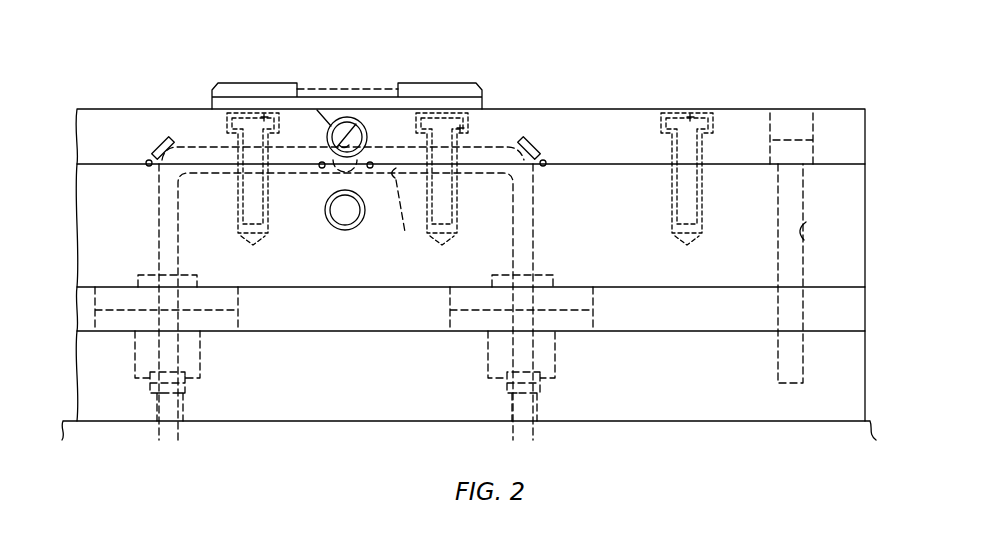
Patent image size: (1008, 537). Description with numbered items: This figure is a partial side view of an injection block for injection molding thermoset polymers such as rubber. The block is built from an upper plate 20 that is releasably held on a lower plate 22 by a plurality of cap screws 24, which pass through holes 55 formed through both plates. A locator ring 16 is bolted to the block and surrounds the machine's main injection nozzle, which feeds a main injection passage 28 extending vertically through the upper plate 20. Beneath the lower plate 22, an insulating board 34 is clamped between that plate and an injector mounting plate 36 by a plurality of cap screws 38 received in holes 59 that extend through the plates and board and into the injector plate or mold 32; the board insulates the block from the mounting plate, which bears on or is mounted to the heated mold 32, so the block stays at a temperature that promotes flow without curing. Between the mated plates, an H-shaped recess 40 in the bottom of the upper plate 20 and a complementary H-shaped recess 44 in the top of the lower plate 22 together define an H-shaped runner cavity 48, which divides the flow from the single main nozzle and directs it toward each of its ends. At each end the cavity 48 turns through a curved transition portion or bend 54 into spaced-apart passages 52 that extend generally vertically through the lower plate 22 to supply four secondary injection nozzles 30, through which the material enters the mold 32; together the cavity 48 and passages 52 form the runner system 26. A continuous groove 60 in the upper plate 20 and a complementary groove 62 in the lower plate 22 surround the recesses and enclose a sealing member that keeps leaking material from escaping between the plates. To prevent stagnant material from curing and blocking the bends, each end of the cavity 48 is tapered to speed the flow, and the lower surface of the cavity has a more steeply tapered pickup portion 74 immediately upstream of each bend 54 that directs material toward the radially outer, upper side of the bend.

The locator ring 16 is at (463, 88).
The upper plate 20 is at (835, 112).
The lower plate 22 is at (866, 208).
The cap screws 24 is at (251, 116).
The runner system 26 is at (503, 144).
The main injection passage 28 is at (366, 112).
The secondary injection nozzles 30 is at (200, 383).
The mold 32 is at (873, 421).
The insulating board 34 is at (860, 305).
The injector mounting plate 36 is at (862, 362).
The cap screws 38 is at (781, 140).
The H-shaped recess 40 is at (397, 158).
The H-shaped recess 44 is at (364, 210).
The runner cavity 48 is at (413, 172).
The passages 52 is at (160, 197).
The bend 54 is at (160, 136).
The holes 55 is at (258, 240).
The holes 59 is at (808, 233).
The groove 60 is at (150, 158).
The groove 62 is at (149, 166).
The pickup portion 74 is at (187, 186).